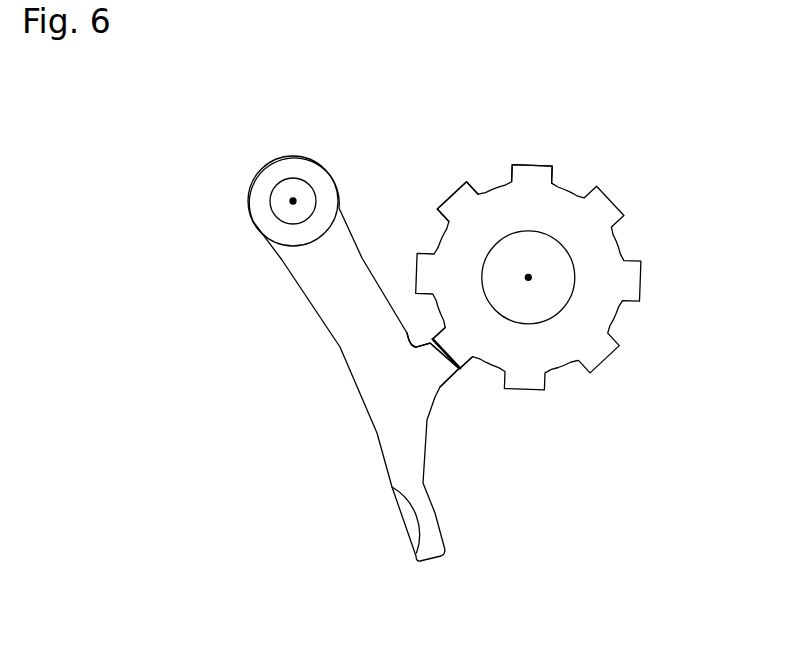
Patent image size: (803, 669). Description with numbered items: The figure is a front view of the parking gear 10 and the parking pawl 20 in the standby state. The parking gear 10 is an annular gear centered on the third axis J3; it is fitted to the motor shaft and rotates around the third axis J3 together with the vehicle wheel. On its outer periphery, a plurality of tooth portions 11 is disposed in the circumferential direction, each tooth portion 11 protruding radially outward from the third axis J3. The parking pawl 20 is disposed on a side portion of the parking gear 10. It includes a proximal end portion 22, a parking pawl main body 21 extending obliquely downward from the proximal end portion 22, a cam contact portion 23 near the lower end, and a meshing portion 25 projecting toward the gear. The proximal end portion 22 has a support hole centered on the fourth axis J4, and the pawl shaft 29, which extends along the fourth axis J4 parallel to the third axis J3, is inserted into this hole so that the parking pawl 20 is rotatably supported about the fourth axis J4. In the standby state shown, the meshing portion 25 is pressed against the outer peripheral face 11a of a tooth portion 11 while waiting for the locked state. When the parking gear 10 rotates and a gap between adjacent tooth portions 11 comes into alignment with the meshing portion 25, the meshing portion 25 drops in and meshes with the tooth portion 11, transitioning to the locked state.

The parking gear 10 is at (609, 193).
The tooth portion 11 is at (532, 167).
The outer peripheral face 11a is at (446, 370).
The parking pawl 20 is at (321, 311).
The parking pawl main body 21 is at (383, 373).
The proximal end portion 22 is at (260, 208).
The cam contact portion 23 is at (418, 521).
The meshing portion 25 is at (432, 353).
The pawl shaft 29 is at (300, 190).
The third axis J3 is at (528, 277).
The fourth axis J4 is at (293, 200).